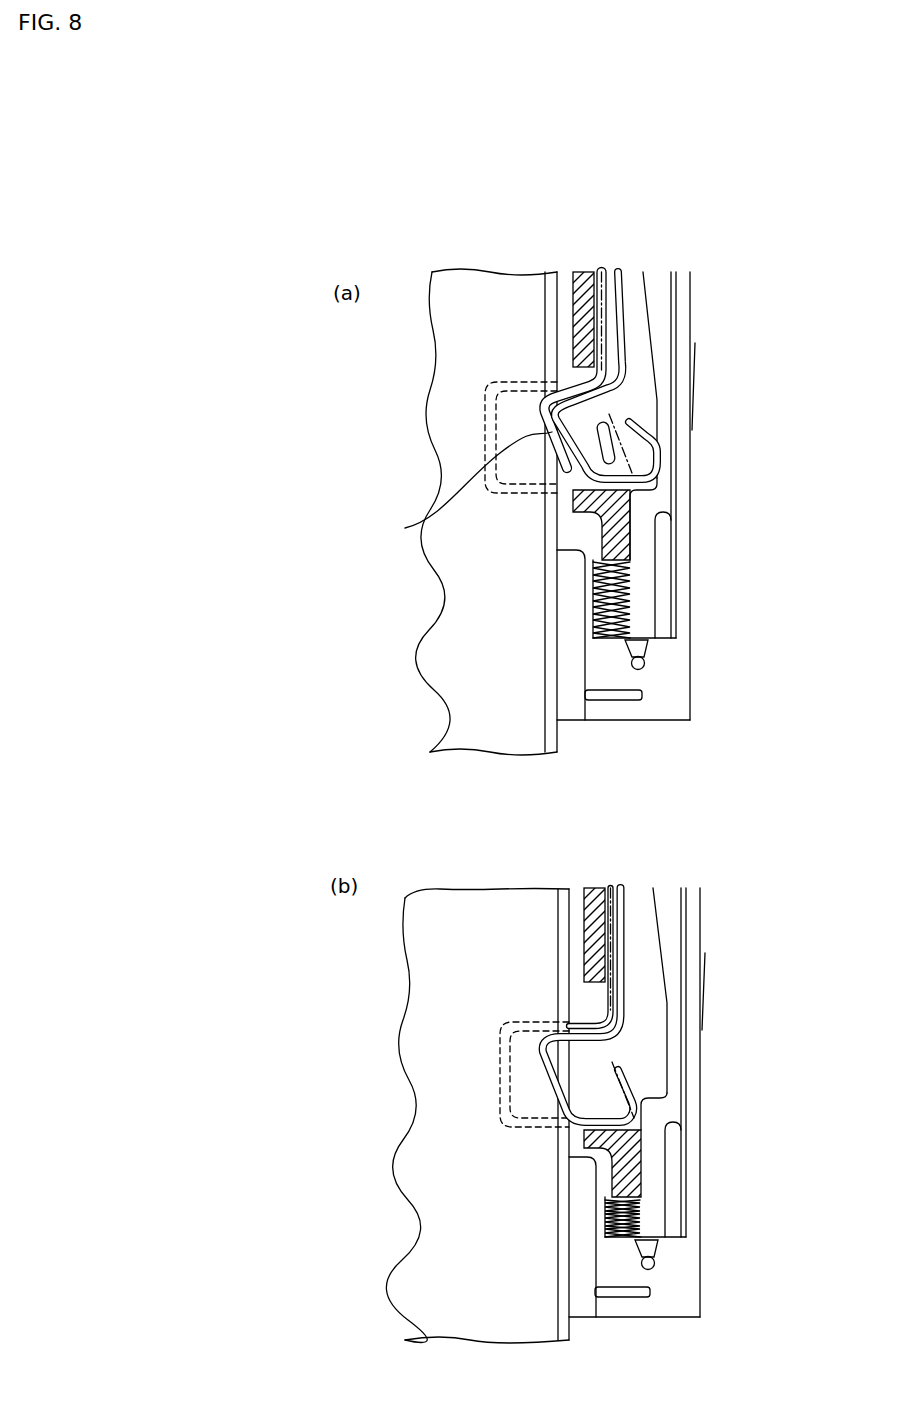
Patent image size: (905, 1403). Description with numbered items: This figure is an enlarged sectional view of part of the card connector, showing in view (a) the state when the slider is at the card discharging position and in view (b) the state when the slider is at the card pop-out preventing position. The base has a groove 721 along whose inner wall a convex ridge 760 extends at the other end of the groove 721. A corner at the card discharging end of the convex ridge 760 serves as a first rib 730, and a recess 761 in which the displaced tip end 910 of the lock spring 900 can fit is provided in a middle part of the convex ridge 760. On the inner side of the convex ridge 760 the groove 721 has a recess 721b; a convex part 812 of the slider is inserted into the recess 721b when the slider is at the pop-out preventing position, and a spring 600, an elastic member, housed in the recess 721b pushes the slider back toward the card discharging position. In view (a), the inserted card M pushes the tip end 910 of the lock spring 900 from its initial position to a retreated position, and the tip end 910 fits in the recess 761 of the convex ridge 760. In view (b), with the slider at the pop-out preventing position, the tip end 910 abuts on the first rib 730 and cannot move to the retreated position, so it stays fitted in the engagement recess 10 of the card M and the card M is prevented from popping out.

The engagement recess 10 is at (485, 422).
The card M is at (497, 735).
The groove 721 is at (623, 297).
The recess 721b is at (632, 626).
The lock spring 900 is at (617, 330).
The tip end 910 is at (576, 405).
The recess 761 is at (660, 382).
The first rib 730 is at (648, 497).
The convex part 812 is at (628, 521).
The convex ridge 760 is at (648, 583).
The spring 600 is at (632, 612).